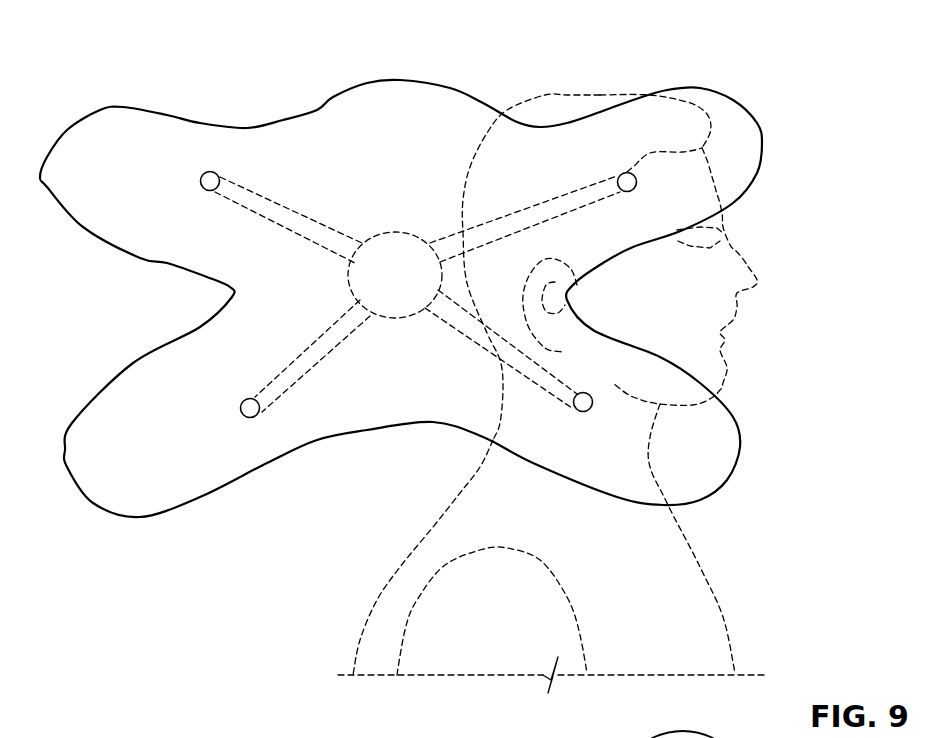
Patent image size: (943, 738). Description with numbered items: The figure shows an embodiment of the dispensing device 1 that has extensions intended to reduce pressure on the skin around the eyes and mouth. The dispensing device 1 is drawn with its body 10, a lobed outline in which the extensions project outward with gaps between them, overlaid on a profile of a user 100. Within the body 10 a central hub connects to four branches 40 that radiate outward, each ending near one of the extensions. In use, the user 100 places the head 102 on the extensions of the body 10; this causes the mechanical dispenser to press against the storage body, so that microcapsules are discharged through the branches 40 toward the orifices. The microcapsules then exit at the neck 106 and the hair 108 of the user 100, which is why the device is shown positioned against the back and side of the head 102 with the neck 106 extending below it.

The dispensing device 1 is at (138, 33).
The body 10 is at (97, 128).
The branches 40 is at (313, 222).
The user 100 is at (512, 634).
The head 102 is at (545, 95).
The neck 106 is at (517, 507).
The hair 108 is at (603, 97).